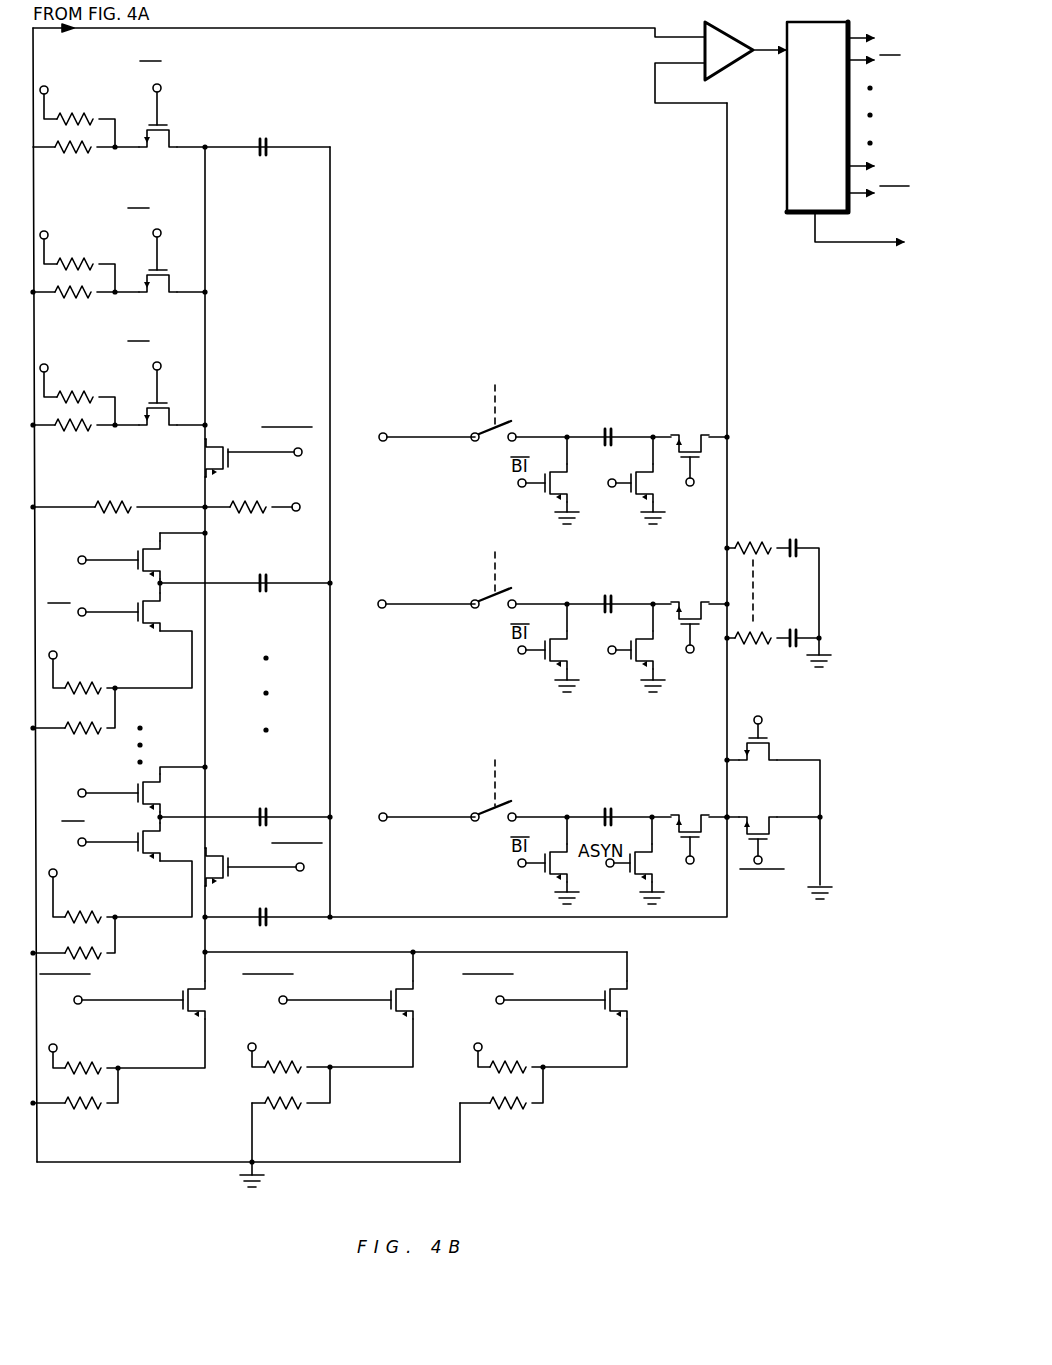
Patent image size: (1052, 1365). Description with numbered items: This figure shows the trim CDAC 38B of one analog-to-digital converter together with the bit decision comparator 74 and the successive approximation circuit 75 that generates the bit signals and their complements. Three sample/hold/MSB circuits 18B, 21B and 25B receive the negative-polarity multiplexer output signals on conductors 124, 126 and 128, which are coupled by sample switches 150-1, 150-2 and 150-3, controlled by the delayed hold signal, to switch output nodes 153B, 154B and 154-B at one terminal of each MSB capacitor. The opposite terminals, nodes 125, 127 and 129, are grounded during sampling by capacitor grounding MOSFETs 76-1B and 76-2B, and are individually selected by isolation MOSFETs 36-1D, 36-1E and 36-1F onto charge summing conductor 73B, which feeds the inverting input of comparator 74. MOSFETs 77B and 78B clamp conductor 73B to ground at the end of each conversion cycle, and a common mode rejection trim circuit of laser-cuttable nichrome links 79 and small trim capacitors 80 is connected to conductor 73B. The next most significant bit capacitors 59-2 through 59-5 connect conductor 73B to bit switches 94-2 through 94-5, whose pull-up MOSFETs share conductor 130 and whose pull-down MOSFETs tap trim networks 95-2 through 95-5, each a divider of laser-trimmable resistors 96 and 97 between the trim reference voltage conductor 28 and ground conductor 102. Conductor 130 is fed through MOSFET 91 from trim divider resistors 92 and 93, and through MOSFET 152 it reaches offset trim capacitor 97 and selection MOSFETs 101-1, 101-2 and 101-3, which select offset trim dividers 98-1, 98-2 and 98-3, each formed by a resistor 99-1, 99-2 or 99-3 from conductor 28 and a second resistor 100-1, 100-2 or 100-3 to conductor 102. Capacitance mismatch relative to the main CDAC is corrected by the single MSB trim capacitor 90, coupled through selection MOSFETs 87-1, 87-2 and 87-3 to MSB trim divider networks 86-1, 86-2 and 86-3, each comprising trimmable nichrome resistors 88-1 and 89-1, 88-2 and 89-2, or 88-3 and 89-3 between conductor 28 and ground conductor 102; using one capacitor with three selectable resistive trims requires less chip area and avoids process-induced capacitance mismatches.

The VREF1T conductor 28 is at (48, 92).
The bit decision comparator 74 is at (730, 36).
The successive approximation (SAR) circuit 75 is at (855, 24).
The ground conductor 102 is at (36, 499).
The MSB trim divider network 86-1 is at (128, 64).
The MSB trim divider network 86-2 is at (112, 212).
The MSB trim divider network 86-3 is at (113, 348).
The selection MOSFET 87-1 is at (173, 126).
The selection MOSFET 87-2 is at (170, 273).
The selection MOSFET 87-3 is at (170, 406).
The trimmable nichrome resistor 88-1 is at (67, 127).
The trimmable nichrome resistor 88-2 is at (67, 273).
The trimmable nichrome resistor 88-3 is at (67, 406).
The trimmable nichrome resistor 89-1 is at (80, 153).
The trimmable nichrome resistor 89-2 is at (85, 299).
The trimmable nichrome resistor 89-3 is at (85, 432).
The MSB trim capacitor 90 is at (266, 137).
The N channel MOSFET 91 is at (208, 475).
The nichrome trim resistor 92 is at (242, 513).
The trim divider resistor 93 is at (126, 510).
The conductor 130 is at (205, 540).
The bit switch 94-2 is at (114, 552).
The bit switch 94-5 is at (112, 778).
The bit capacitor 59-2 is at (263, 573).
The bit capacitor 59-5 is at (262, 812).
The trim network 95-2 is at (147, 697).
The trim network 95-5 is at (140, 935).
The voltage divider trim resistor 96 is at (78, 690).
The voltage divider trim resistor / offset trim capacitor 97 is at (92, 728).
The N channel MOSFET 152 is at (228, 858).
The selection transistor 101-1 is at (188, 1015).
The selection transistor 101-2 is at (385, 1015).
The selection transistor 101-3 is at (600, 1015).
The resistor 99-1 is at (100, 1072).
The resistor 99-2 is at (305, 1072).
The resistor 99-3 is at (520, 1072).
The second resistor 100-1 is at (92, 1107).
The second resistor 100-2 is at (292, 1107).
The second resistor 100-3 is at (522, 1107).
The offset trim circuit 98-1 is at (130, 1078).
The offset trim circuit 98-2 is at (352, 1078).
The offset trim circuit 98-3 is at (561, 1080).
The trim CDAC 38B is at (125, 1186).
The conductor 124 is at (383, 443).
The conductor 126 is at (378, 610).
The conductor 128 is at (381, 823).
The sample switch 150-1 is at (488, 442).
The sample switch 150-2 is at (488, 611).
The sample switch 150-3 is at (489, 822).
The node 153B is at (569, 435).
The node 154B is at (568, 602).
The node 154-B is at (567, 815).
The sample/hold/MSB circuit 18B is at (610, 396).
The sample/hold/MSB circuit 21B is at (606, 565).
The sample/hold/MSB circuit 25B is at (556, 752).
The node 125 is at (651, 432).
The node 127 is at (654, 602).
The node 129 is at (651, 813).
The reset transistor 76-1B is at (628, 497).
The reset transistor 76-2B is at (626, 665).
The isolation MOSFET 36-1D is at (702, 432).
The isolation MOSFET 36-1E is at (699, 600).
The isolation MOSFET 36-1F is at (699, 814).
The charge summing conductor 73B is at (330, 386).
The nichrome link 79 is at (744, 546).
The trim capacitor 80 is at (795, 545).
The MOSFET 77B is at (778, 754).
The MOSFET 78B is at (778, 822).